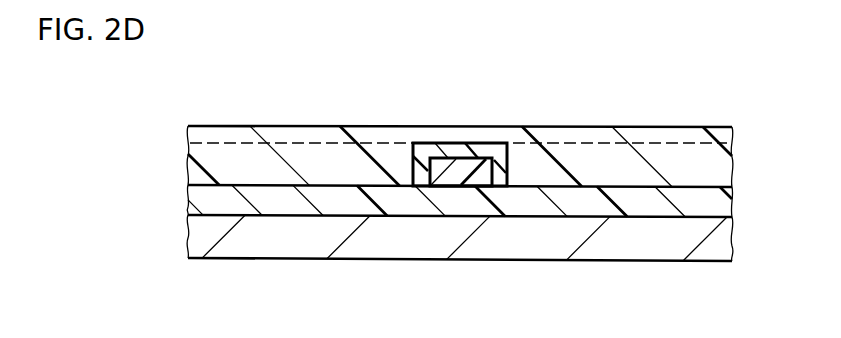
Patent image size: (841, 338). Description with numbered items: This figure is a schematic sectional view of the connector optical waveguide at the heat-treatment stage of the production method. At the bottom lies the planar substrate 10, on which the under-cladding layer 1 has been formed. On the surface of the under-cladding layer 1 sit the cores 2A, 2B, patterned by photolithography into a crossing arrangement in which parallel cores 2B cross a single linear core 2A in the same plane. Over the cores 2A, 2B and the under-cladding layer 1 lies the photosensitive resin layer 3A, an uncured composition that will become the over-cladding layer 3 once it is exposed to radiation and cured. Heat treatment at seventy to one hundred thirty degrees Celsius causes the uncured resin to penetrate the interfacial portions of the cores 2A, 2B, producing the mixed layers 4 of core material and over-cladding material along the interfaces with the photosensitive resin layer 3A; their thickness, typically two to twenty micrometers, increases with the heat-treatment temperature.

The under-cladding layer 1 is at (203, 203).
The core 2A is at (453, 172).
The core 2B is at (332, 158).
The over-cladding layer 3 is at (460, 118).
The photosensitive resin layer 3A is at (221, 133).
The mixed layer 4 is at (486, 150).
The substrate 10 is at (202, 242).